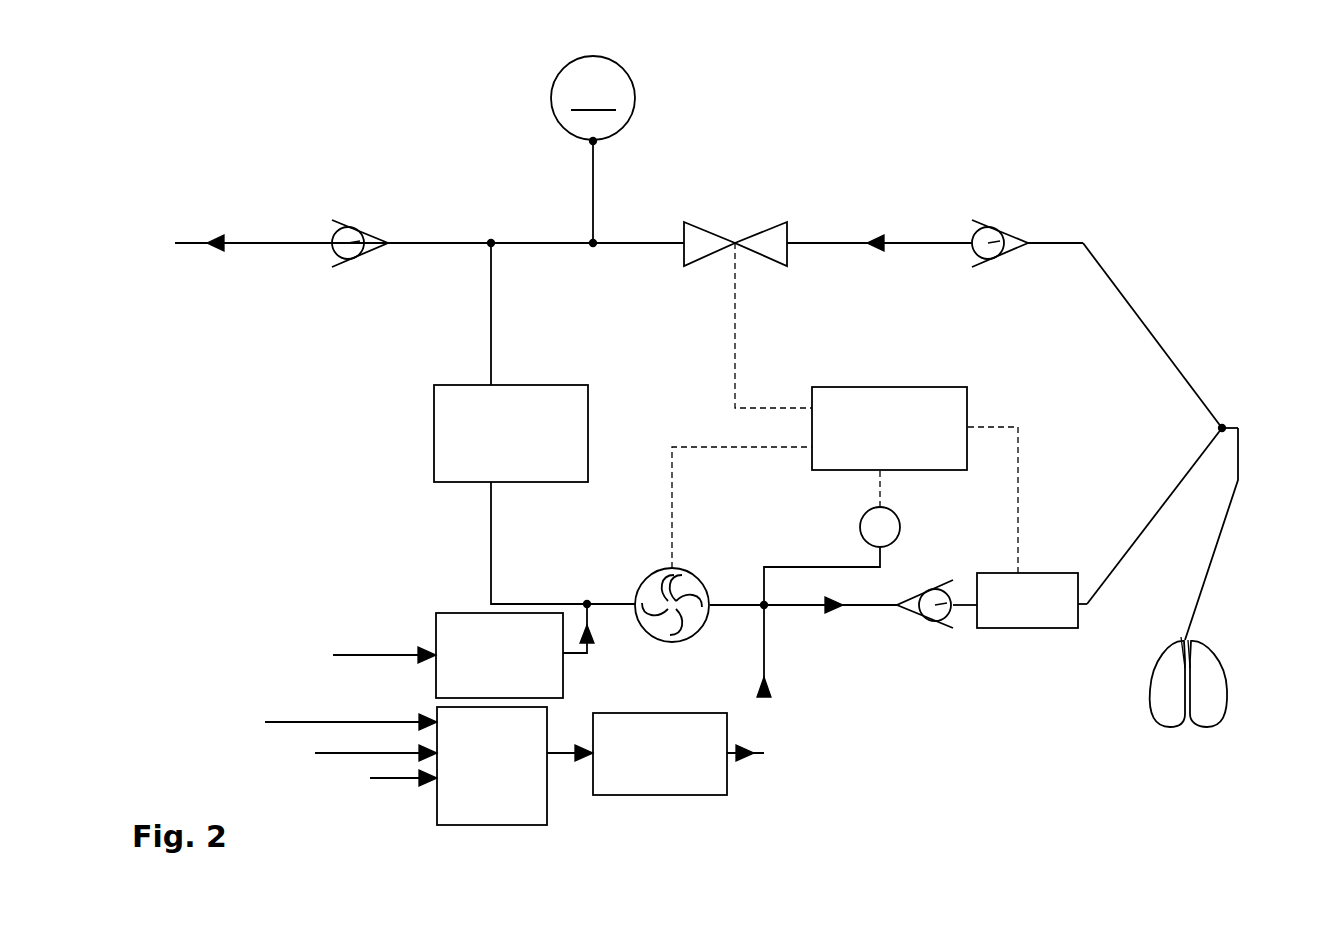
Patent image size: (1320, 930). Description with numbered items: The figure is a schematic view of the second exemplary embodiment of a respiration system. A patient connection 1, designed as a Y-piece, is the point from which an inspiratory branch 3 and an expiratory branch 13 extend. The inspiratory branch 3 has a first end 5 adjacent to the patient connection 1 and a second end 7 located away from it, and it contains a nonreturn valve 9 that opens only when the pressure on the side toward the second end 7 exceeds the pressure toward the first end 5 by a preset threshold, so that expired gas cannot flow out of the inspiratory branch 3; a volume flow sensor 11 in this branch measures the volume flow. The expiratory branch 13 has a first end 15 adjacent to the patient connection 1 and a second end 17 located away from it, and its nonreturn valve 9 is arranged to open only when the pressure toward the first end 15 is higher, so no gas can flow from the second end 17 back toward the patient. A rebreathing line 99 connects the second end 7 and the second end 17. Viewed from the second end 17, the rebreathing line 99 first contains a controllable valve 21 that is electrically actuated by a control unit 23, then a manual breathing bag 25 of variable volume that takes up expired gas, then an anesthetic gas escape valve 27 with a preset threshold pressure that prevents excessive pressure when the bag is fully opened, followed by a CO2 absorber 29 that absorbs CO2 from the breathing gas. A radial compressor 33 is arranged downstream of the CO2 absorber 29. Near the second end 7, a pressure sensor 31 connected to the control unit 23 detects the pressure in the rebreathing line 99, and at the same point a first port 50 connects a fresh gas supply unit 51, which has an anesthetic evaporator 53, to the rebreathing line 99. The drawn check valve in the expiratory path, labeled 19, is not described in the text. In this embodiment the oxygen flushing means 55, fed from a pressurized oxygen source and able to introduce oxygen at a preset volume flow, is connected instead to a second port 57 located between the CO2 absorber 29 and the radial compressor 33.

The patient connection 1 is at (1238, 428).
The inspiratory branch 3 is at (1107, 590).
The first end 5 is at (1182, 480).
The second end 7 is at (830, 612).
The nonreturn valve 9 is at (945, 620).
The volume flow sensor 11 is at (1027, 628).
The expiratory branch 13 is at (1125, 300).
The first end 15 is at (1200, 396).
The second end 17 is at (883, 242).
The expiratory check valve 19 is at (995, 235).
The controllable valve 21 is at (735, 243).
The control unit 23 is at (905, 386).
The manual breathing bag 25 is at (593, 149).
The anesthetic gas escape valve 27 is at (363, 237).
The CO2 absorber 29 is at (433, 430).
The pressure sensor 31 is at (897, 527).
The radial compressor 33 is at (636, 592).
The first port 50 is at (764, 605).
The fresh gas supply unit 51 is at (547, 825).
The anesthetic evaporator 53 is at (712, 795).
The oxygen flushing means 55 is at (433, 612).
The second port 57 is at (587, 604).
The rebreathing line 99 is at (491, 243).